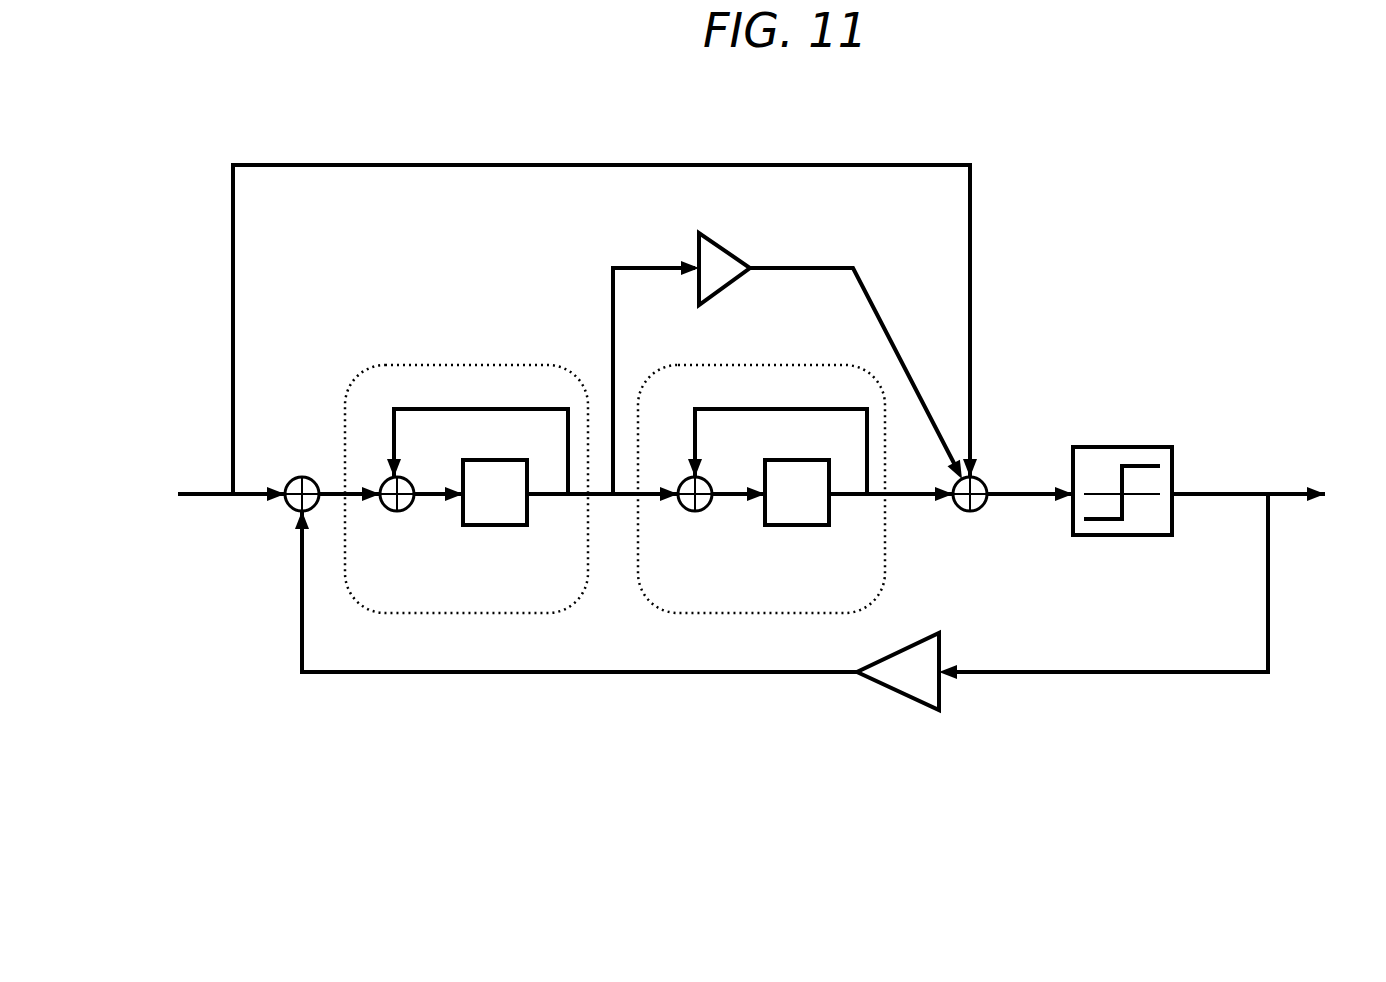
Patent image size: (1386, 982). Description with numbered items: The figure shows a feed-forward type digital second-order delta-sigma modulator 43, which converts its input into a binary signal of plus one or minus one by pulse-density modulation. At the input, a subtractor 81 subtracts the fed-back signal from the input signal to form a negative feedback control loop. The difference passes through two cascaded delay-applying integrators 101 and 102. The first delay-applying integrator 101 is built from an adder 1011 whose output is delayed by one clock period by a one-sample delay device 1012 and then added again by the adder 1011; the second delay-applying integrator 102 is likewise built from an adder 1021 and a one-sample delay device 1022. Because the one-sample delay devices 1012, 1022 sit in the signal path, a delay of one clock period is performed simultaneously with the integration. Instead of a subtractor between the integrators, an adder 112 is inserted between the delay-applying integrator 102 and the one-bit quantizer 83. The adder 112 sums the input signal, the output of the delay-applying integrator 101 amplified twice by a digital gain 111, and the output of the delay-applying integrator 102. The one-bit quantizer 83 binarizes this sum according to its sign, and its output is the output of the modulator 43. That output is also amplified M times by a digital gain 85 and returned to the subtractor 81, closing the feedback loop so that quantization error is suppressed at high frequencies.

The digital second-order delta-sigma modulator 43 is at (878, 130).
The subtractor 81 is at (305, 477).
The delay-applying integrator 101 is at (465, 365).
The adder 1011 is at (397, 511).
The one-sample delay device 1012 is at (495, 527).
The delay-applying integrator 102 is at (762, 365).
The adder 1021 is at (695, 511).
The one-sample delay device 1022 is at (800, 527).
The digital gain 111 is at (725, 250).
The adder 112 is at (982, 473).
The one-bit quantizer 83 is at (1122, 447).
The digital gain 85 is at (897, 692).